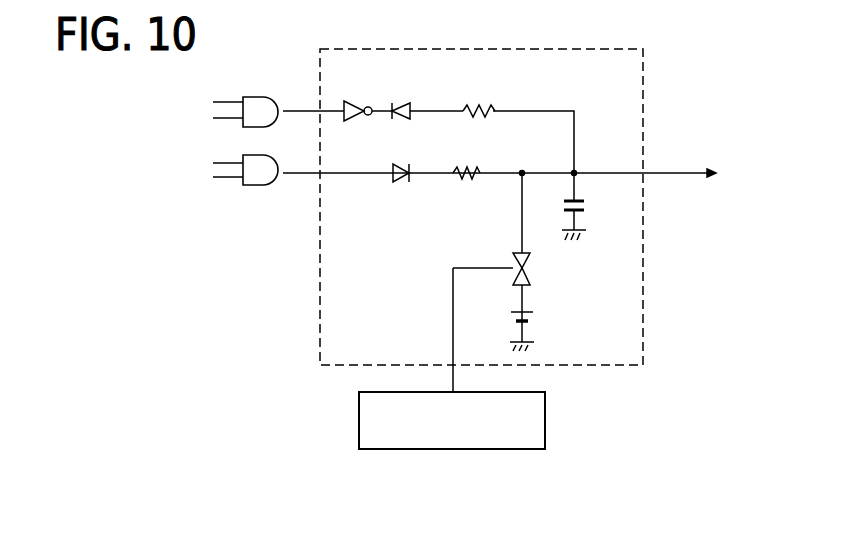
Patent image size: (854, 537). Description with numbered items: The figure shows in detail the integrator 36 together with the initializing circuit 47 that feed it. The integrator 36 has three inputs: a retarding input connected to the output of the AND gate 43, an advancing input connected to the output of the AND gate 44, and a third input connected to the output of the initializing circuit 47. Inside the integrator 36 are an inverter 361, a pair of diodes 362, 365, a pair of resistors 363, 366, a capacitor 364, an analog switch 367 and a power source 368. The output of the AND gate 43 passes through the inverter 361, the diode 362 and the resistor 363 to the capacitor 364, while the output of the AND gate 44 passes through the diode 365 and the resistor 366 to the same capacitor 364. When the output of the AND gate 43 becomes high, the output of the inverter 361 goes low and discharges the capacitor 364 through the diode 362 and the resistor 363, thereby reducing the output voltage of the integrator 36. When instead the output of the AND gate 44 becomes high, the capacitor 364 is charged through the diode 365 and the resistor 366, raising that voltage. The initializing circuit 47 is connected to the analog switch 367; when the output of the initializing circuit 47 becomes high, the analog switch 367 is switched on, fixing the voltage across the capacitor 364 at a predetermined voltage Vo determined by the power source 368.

The integrator 36 is at (645, 74).
The AND gate 43 is at (258, 97).
The AND gate 44 is at (260, 186).
The initializing circuit 47 is at (546, 420).
The inverter 361 is at (362, 100).
The diode 362 is at (406, 101).
The resistor 363 is at (480, 105).
The capacitor 364 is at (587, 216).
The diode 365 is at (398, 183).
The resistor 366 is at (466, 178).
The analog switch 367 is at (531, 268).
The power source 368 is at (535, 322).